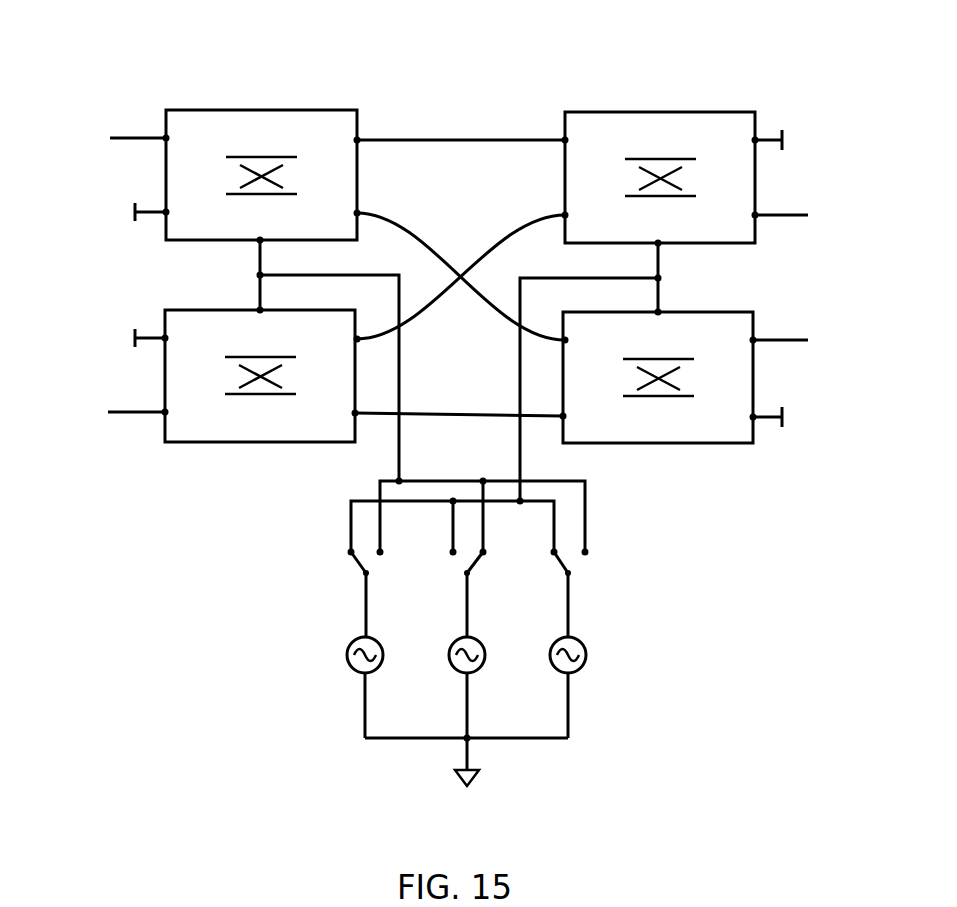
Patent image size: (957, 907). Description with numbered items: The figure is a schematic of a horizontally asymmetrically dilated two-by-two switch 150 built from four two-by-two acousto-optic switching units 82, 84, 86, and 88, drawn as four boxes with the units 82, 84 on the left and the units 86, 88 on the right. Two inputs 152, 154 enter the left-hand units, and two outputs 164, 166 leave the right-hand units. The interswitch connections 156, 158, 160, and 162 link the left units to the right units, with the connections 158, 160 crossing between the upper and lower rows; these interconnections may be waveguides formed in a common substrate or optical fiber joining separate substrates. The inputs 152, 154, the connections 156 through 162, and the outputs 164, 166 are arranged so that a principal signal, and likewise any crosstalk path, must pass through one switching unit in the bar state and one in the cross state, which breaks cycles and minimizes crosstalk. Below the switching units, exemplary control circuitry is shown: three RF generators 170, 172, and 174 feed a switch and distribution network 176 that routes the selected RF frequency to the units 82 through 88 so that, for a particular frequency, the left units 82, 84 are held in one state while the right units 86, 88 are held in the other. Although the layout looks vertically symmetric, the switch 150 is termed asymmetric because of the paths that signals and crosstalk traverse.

The horizontally asymmetrically dilated 2×2 switch 150 is at (466, 72).
The 2×2 acousto-optic switching unit 82 is at (246, 147).
The 2×2 acousto-optic switching unit 84 is at (245, 405).
The 2×2 acousto-optic switching unit 86 is at (673, 150).
The 2×2 acousto-optic switching unit 88 is at (672, 406).
The input 152 is at (133, 137).
The input 154 is at (130, 411).
The interswitch connection 156 is at (461, 115).
The interswitch connection 158 is at (431, 244).
The interswitch connection 160 is at (487, 244).
The interswitch connection 162 is at (430, 410).
The output 164 is at (775, 214).
The output 166 is at (774, 339).
The RF generator 170 is at (346, 655).
The RF generator 172 is at (448, 655).
The RF generator 174 is at (549, 655).
The switch and distribution network 176 is at (616, 498).